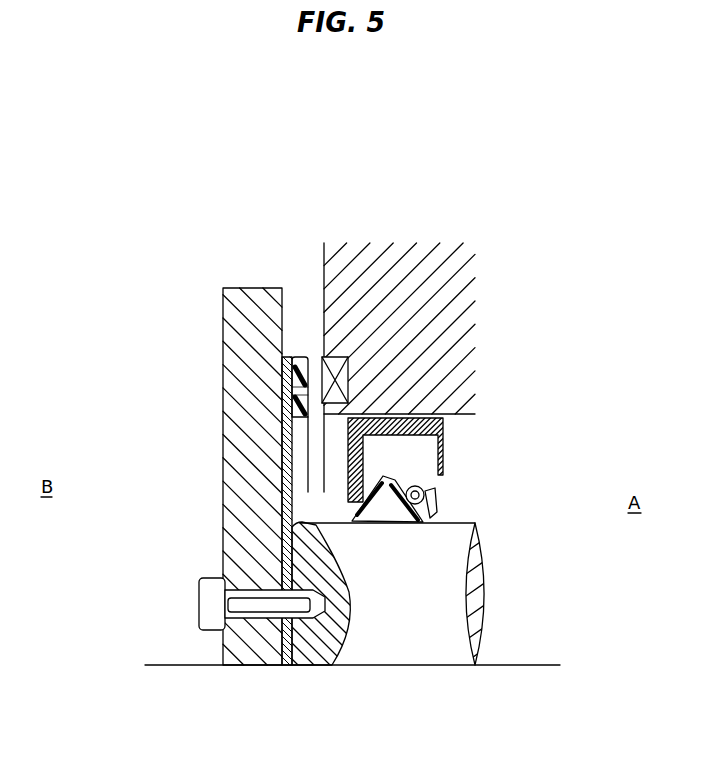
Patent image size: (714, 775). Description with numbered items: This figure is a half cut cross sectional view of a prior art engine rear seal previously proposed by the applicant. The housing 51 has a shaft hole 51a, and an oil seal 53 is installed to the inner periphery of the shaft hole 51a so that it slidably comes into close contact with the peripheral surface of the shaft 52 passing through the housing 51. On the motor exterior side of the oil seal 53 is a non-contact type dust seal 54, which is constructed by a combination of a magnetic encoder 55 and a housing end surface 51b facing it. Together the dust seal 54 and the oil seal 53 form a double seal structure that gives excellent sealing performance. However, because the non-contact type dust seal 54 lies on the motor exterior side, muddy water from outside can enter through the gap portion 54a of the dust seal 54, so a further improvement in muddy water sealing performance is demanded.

The housing 51 is at (402, 330).
The shaft hole 51a is at (458, 432).
The housing end surface 51b is at (322, 352).
The shaft 52 is at (427, 648).
The oil seal 53 is at (433, 479).
The non-contact type dust seal 54 is at (238, 460).
The gap portion 54a is at (284, 362).
The magnetic encoder 55 is at (292, 397).